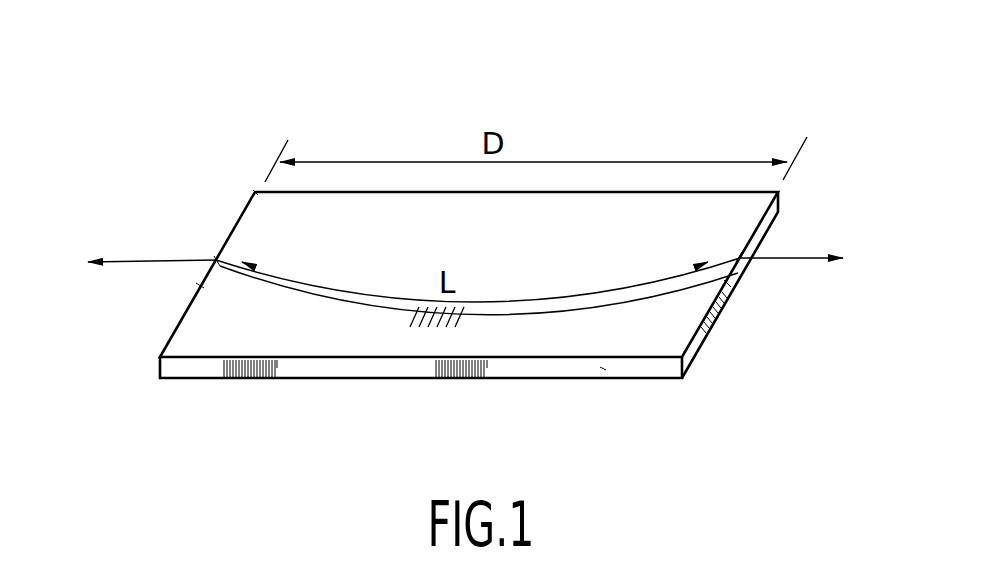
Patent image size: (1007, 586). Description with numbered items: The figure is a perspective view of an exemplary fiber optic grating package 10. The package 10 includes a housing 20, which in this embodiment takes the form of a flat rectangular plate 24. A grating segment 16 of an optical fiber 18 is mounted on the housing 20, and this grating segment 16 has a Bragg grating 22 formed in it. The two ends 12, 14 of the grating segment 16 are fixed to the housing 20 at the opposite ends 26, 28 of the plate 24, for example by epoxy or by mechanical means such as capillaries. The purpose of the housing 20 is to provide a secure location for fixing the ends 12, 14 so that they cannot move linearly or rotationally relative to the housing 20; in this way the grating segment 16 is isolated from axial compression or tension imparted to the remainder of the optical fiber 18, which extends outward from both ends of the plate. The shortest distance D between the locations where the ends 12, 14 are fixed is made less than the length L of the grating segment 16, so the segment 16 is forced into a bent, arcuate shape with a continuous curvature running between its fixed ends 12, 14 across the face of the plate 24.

The fiber optic grating package 10 is at (612, 133).
The end of grating segment 12 is at (763, 236).
The end of grating segment 14 is at (218, 260).
The grating segment 16 is at (650, 297).
The optical fiber 18 is at (132, 259).
The housing 20 is at (253, 192).
The Bragg grating 22 is at (408, 321).
The flat rectangular plate 24 is at (600, 367).
The end of plate 26 is at (200, 286).
The end of plate 28 is at (727, 283).